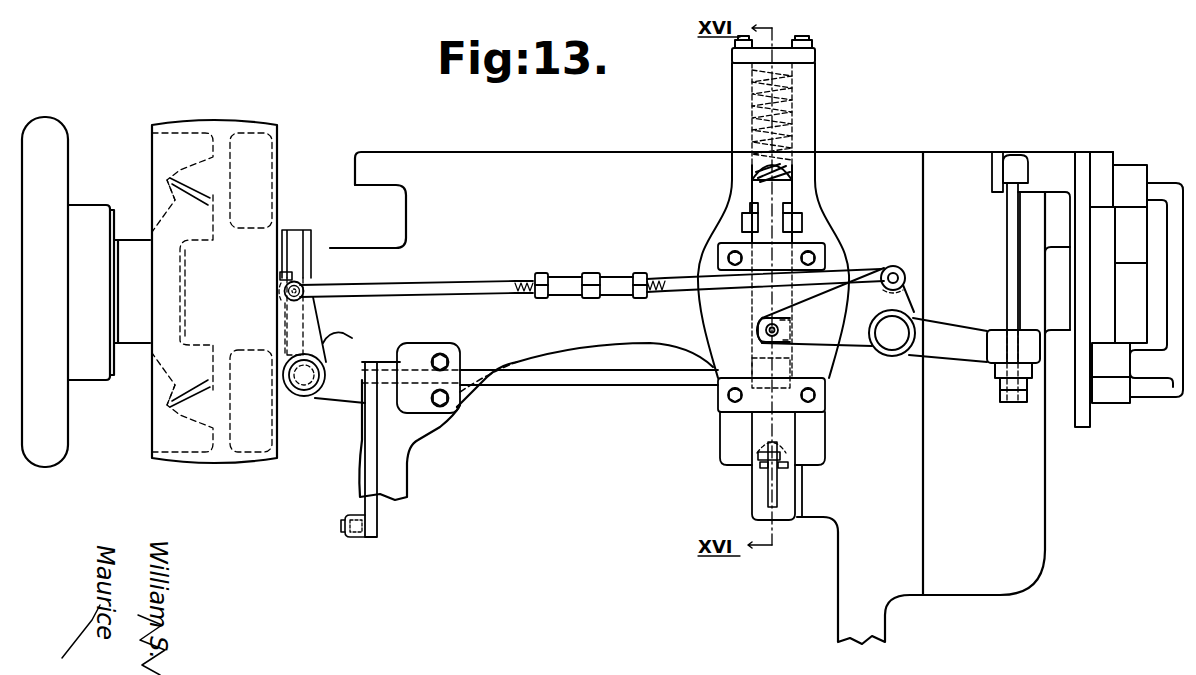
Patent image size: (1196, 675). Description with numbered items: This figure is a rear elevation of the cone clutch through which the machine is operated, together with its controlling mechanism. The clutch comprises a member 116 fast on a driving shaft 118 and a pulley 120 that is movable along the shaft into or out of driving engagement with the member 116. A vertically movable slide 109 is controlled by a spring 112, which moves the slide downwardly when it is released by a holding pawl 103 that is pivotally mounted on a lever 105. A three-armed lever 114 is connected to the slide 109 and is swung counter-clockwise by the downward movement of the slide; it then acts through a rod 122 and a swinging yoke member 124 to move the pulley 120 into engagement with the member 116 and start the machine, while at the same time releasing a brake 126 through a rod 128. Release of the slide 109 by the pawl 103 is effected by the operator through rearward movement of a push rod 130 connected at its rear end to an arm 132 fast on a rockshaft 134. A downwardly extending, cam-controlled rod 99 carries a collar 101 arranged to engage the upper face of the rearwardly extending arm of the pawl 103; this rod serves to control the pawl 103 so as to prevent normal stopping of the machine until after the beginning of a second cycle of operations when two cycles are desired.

The rod 99 is at (768, 493).
The collar 101 is at (755, 456).
The pawl 103 is at (798, 469).
The lever 105 is at (760, 511).
The slide 109 is at (760, 300).
The spring 112 is at (795, 96).
The three-armed lever 114 is at (858, 348).
The clutch member 116 is at (169, 206).
The driving shaft 118 is at (314, 278).
The pulley 120 is at (260, 124).
The rod 122 is at (486, 290).
The swinging yoke member 124 is at (313, 333).
The brake 126 is at (1108, 335).
The rod 128 is at (1012, 250).
The push rod 130 is at (354, 536).
The arm 132 is at (372, 482).
The rockshaft 134 is at (618, 380).